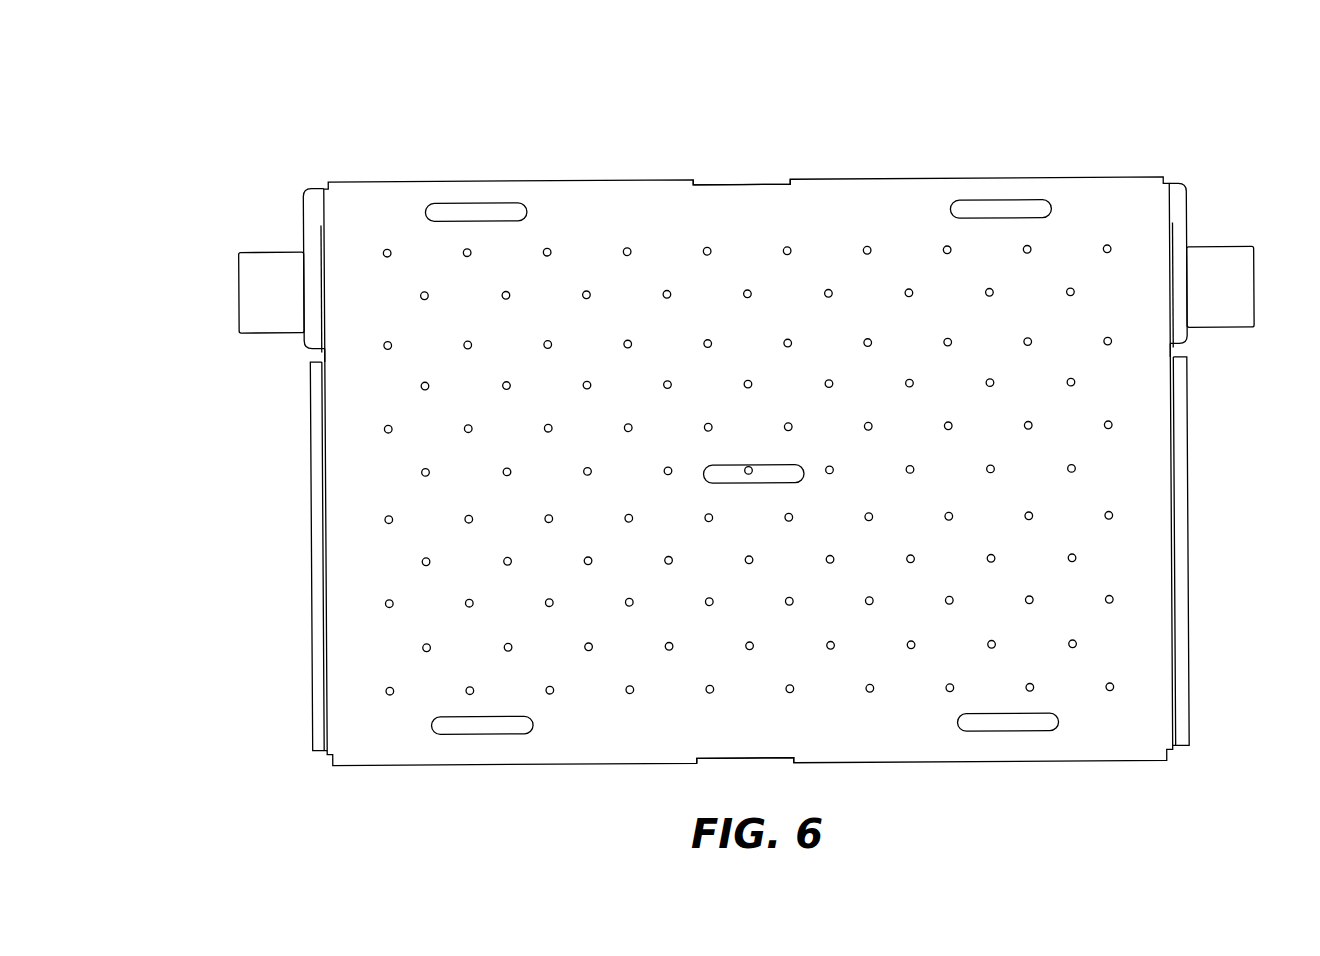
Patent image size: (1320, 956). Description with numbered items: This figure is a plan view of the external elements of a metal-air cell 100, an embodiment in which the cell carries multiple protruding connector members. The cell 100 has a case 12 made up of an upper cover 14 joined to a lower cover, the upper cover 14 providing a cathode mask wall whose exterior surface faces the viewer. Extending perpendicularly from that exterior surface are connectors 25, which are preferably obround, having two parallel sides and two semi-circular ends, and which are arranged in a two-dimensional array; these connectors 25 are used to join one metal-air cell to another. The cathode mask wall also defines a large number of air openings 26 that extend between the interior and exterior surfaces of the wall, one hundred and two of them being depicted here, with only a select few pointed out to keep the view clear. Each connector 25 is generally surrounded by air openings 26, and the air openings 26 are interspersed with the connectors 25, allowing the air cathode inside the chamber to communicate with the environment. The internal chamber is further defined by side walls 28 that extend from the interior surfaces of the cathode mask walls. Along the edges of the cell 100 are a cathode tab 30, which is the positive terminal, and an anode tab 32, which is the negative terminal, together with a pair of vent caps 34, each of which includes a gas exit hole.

The metal-air cell 100 is at (748, 445).
The case 12 is at (569, 180).
The upper cover 14 is at (860, 178).
The connectors 25 is at (468, 201).
The air openings 26 is at (668, 290).
The side walls 28 is at (748, 182).
The cathode tab 30 is at (1257, 287).
The anode tab 32 is at (240, 288).
The vent caps 34 is at (311, 640).